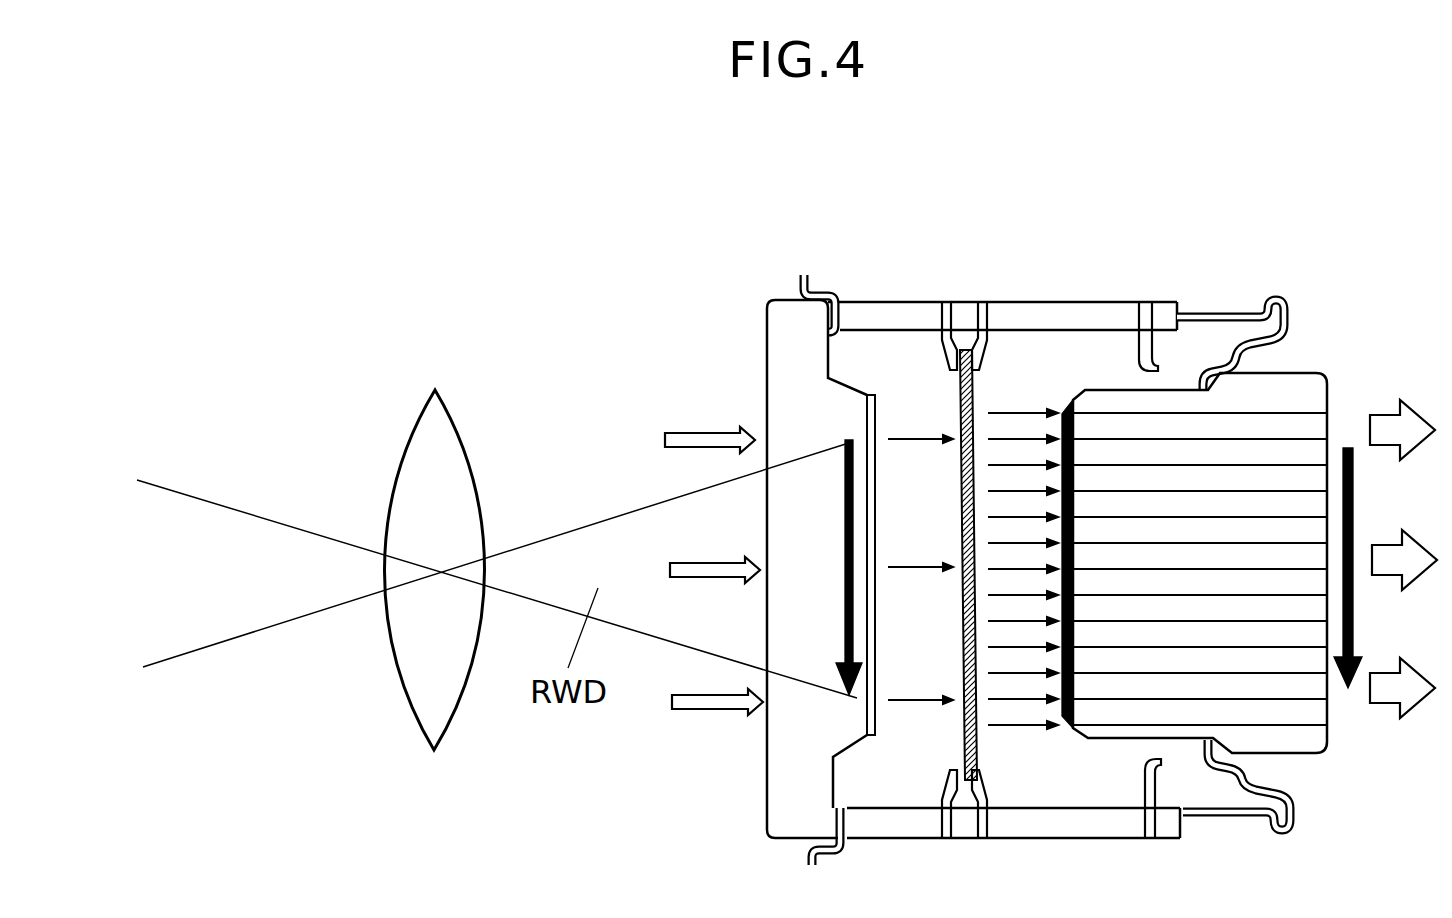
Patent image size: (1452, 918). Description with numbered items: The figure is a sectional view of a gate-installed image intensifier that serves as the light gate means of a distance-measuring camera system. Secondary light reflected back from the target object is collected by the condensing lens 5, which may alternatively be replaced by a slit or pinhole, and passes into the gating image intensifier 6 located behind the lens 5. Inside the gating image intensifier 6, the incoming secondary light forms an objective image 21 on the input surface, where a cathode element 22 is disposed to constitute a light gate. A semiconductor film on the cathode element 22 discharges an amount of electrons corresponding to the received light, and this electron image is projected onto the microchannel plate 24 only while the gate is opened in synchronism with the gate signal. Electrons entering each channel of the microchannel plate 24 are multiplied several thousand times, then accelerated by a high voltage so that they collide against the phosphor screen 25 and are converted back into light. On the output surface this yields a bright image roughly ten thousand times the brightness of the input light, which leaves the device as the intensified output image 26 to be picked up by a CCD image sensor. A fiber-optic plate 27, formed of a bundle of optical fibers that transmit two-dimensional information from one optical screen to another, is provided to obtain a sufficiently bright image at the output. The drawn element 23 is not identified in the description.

The lens 5 is at (413, 495).
The gating image intensifier 6 is at (895, 270).
The objective image 21 is at (844, 548).
The cathode element 22 is at (827, 352).
The window 23 is at (867, 413).
The microchannel plate 24 is at (973, 383).
The phosphor screen 25 is at (1243, 571).
The intensified output image 26 is at (1353, 530).
The fiber-optic plate 27 is at (1205, 632).